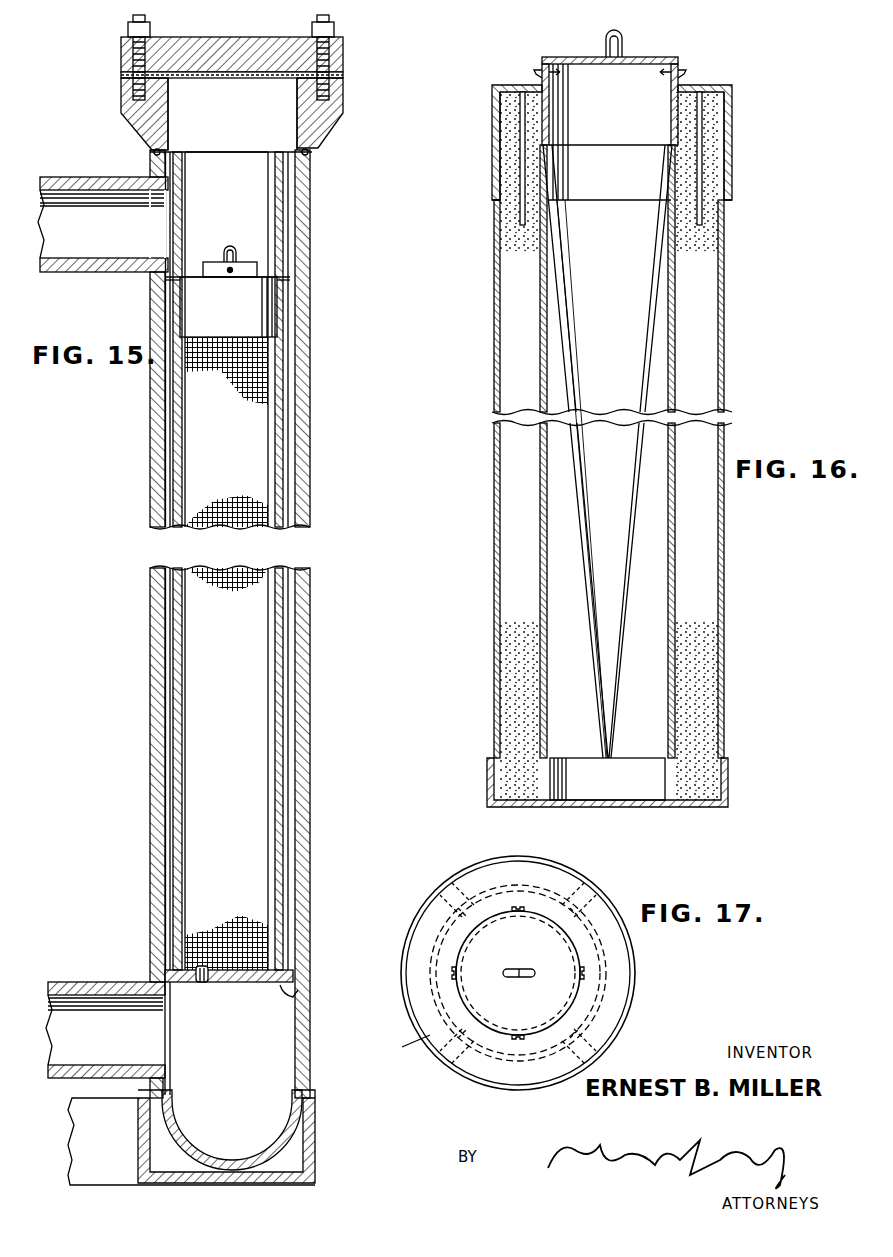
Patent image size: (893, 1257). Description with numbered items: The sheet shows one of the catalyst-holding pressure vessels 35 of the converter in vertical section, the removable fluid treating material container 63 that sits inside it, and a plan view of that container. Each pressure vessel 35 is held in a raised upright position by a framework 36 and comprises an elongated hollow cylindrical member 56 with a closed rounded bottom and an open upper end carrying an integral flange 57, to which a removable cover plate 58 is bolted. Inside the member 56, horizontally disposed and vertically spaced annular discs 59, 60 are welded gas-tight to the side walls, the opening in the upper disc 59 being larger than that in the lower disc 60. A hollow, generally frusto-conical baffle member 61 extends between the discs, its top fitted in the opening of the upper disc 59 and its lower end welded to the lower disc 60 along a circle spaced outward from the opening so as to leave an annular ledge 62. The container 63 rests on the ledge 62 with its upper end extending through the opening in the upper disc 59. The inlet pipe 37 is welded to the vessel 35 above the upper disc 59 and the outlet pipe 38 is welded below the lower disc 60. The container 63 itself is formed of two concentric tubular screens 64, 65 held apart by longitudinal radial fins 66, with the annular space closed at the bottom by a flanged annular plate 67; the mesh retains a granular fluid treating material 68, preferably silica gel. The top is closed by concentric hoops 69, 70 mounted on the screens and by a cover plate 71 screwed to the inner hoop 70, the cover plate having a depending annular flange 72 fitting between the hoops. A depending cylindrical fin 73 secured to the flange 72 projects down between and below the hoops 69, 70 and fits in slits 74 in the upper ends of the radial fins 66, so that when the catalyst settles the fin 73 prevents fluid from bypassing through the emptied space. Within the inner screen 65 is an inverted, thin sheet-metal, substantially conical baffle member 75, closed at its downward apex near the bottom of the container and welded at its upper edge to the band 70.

In FIG. 15, the fluid treating cylindrical pressure vessel 35 is at (333, 593).
In FIG. 15, the framework 36 is at (318, 1175).
In FIG. 15, the inlet pipe 37 is at (98, 178).
In FIG. 15, the outlet pipe 38 is at (72, 980).
In FIG. 15, the cylindrical member 56 is at (308, 662).
In FIG. 15, the integral flange 57 is at (328, 134).
In FIG. 15, the removable cover plate 58 is at (250, 42).
In FIG. 15, the upper annular disc 59 is at (288, 283).
In FIG. 15, the lower annular disc 60 is at (300, 994).
In FIG. 15, the baffle member 61 is at (290, 470).
In FIG. 15, the annular ledge 62 is at (208, 985).
In FIG. 15, the fluid treating material container 63 is at (183, 462).
In FIG. 16, the outer tubular screen 64 is at (495, 352).
In FIG. 16, the inner tubular screen 65 is at (540, 362).
In FIG. 17, the longitudinal radial fins 66 is at (590, 890).
In FIG. 16, the flanged annular plate 67 is at (500, 810).
In FIG. 16, the granular fluid treating material 68 is at (710, 692).
In FIG. 16, the outer hoop 69 is at (492, 128).
In FIG. 16, the inner hoop 70 is at (558, 132).
In FIG. 16, the cover plate 71 is at (640, 60).
In FIG. 17, the cover plate 71 is at (532, 1004).
In FIG. 16, the depending annular flange 72 is at (705, 90).
In FIG. 17, the depending annular flange 72 is at (440, 1035).
In FIG. 16, the depending cylindrical fin 73 is at (733, 156).
In FIG. 17, the slits 74 is at (455, 880).
In FIG. 16, the conically-shaped baffle member 75 is at (612, 568).